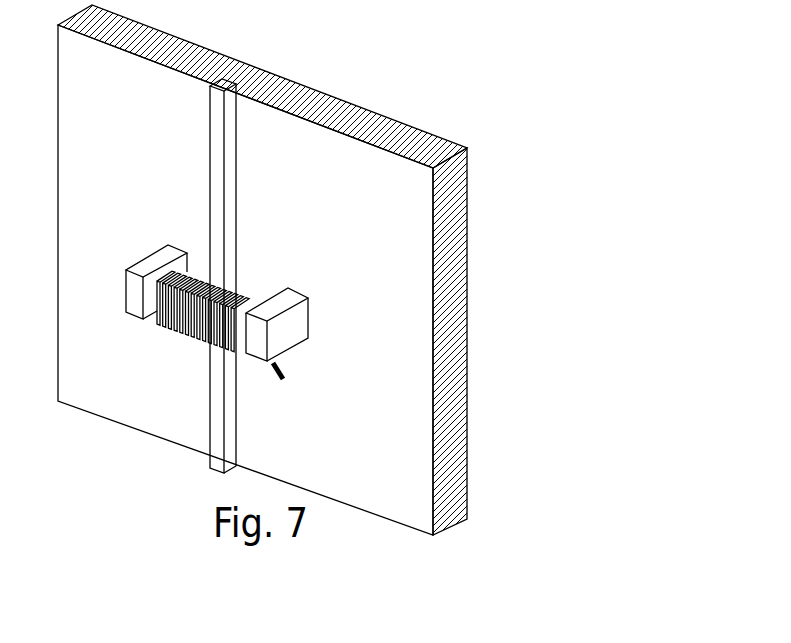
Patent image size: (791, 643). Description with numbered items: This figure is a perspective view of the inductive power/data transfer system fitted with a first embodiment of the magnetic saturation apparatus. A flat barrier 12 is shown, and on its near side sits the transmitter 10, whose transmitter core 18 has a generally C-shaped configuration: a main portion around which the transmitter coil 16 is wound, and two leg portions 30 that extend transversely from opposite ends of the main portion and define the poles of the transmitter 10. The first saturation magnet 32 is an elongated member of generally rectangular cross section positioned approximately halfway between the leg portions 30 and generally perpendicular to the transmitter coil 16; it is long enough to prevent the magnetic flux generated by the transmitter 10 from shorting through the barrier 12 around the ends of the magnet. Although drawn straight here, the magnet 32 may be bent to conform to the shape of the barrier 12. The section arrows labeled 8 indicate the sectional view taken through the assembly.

The barrier 12 is at (110, 87).
The first saturation magnet 32 is at (237, 203).
The leg portions 30 is at (152, 257).
The transmitter 10 is at (231, 305).
The transmitter coil 16 is at (144, 329).
The transmitter core 18 is at (277, 365).
The section line 8- 8 is at (47, 248).